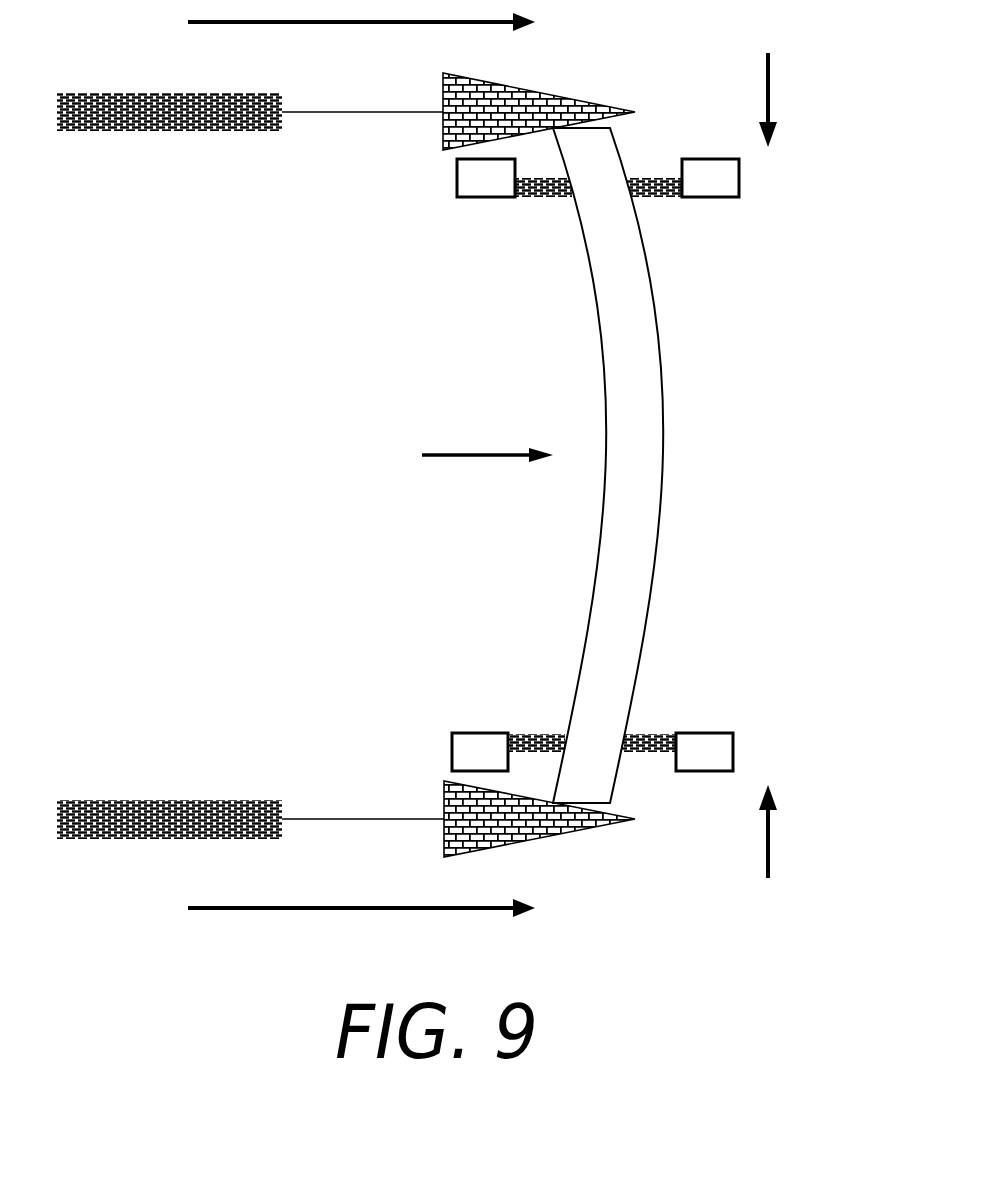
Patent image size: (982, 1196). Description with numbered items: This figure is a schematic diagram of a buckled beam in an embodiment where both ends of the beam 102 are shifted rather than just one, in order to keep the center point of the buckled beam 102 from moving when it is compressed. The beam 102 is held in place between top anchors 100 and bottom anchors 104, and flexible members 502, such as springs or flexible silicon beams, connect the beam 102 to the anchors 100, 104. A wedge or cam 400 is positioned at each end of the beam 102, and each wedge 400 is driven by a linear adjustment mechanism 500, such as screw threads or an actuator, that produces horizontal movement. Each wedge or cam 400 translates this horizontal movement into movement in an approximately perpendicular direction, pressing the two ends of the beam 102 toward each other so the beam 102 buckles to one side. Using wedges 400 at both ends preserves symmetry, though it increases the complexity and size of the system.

The top anchor 100 is at (457, 197).
The beam 102 is at (665, 446).
The bottom anchor 104 is at (450, 733).
The wedge or cam 400 is at (445, 76).
The linear adjustment mechanism 500 is at (137, 128).
The flexible member 502 is at (540, 190).